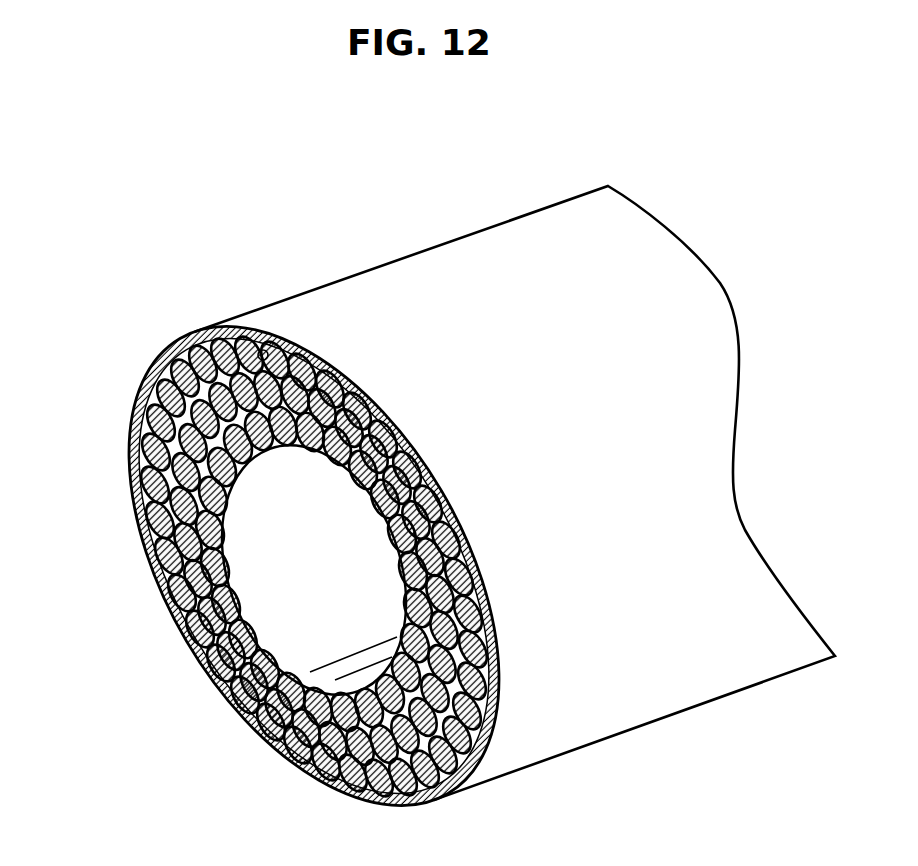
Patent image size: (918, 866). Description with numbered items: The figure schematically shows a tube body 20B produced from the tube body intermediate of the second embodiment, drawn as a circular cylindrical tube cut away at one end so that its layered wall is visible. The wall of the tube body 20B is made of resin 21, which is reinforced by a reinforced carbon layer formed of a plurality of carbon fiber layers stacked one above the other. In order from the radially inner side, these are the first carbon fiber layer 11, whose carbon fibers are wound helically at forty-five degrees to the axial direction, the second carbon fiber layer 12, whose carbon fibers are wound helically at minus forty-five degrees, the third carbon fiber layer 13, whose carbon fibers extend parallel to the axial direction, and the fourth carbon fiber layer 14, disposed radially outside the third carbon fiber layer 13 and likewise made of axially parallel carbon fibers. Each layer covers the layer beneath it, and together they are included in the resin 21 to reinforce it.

The tube body 20B is at (116, 166).
The resin 21 is at (480, 260).
The first carbon fiber layer 11 is at (253, 642).
The second carbon fiber layer 12 is at (187, 483).
The third carbon fiber layer 13 is at (210, 392).
The fourth carbon fiber layer 14 is at (258, 350).